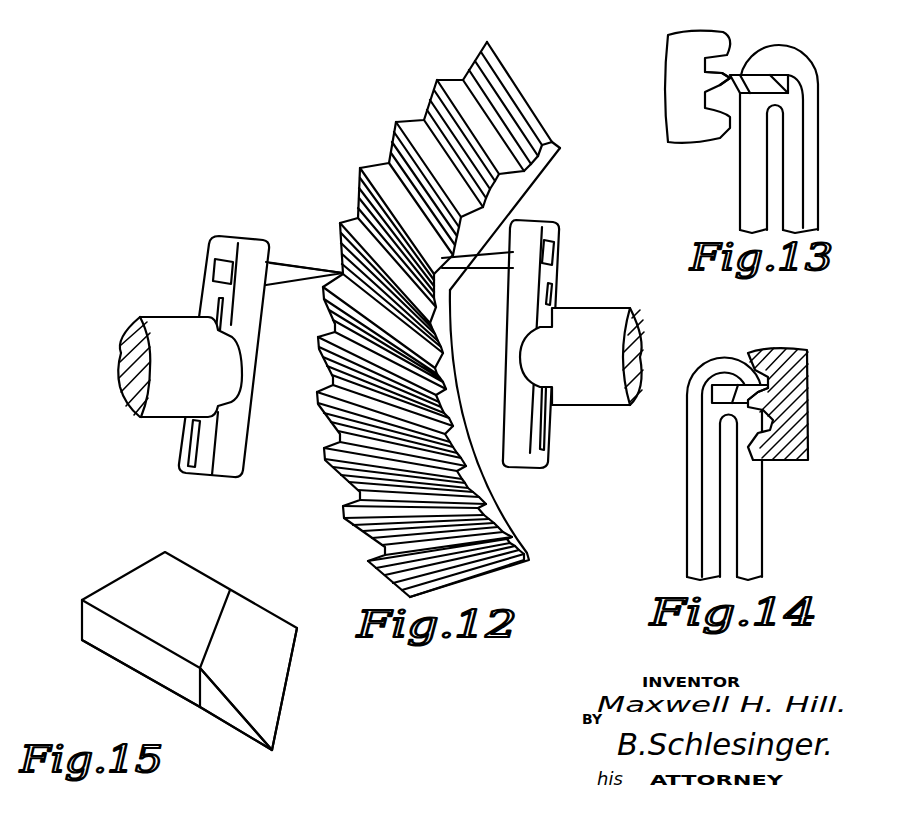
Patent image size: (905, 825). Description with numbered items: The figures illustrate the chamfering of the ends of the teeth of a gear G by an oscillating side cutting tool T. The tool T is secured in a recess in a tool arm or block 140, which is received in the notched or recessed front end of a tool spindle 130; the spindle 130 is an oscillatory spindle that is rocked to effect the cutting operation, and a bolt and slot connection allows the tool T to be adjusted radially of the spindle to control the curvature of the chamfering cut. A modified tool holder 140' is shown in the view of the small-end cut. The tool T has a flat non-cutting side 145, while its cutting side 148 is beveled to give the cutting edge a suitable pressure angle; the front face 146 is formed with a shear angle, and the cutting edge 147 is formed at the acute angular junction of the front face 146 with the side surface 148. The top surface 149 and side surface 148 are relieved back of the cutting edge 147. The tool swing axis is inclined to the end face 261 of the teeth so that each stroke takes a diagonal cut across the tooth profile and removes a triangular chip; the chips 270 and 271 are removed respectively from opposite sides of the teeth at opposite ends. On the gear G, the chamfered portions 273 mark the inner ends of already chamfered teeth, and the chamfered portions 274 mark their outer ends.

In FIG. 12, the gear G is at (533, 107).
In FIG. 13, the gear G is at (673, 98).
In FIG. 14, the gear G is at (807, 357).
In FIG. 12, the chamfered portions of the outer ends of the teeth 274 is at (437, 80).
In FIG. 12, the chamfered portions of the inner ends of the teeth 273 is at (513, 165).
In FIG. 12, the end face of the teeth 261 is at (463, 473).
In FIG. 12, the tool T is at (317, 262).
In FIG. 13, the tool T is at (755, 87).
In FIG. 14, the tool T is at (738, 385).
In FIG. 15, the tool T is at (157, 667).
In FIG. 12, the non-cutting side of the tool 145 is at (288, 263).
In FIG. 12, the tool arm or block 140 is at (237, 356).
In FIG. 13, the tool arm or block 140 is at (801, 139).
In FIG. 14, the modified tool holder 140' is at (695, 469).
In FIG. 12, the tool spindle 130 is at (164, 330).
In FIG. 13, the chip 270 is at (730, 72).
In FIG. 14, the chip 271 is at (770, 388).
In FIG. 15, the front face of the tool 146 is at (230, 722).
In FIG. 15, the cutting edge 147 is at (233, 703).
In FIG. 15, the cutting side of the tool 148 is at (277, 662).
In FIG. 15, the top surface of the tool 149 is at (283, 712).